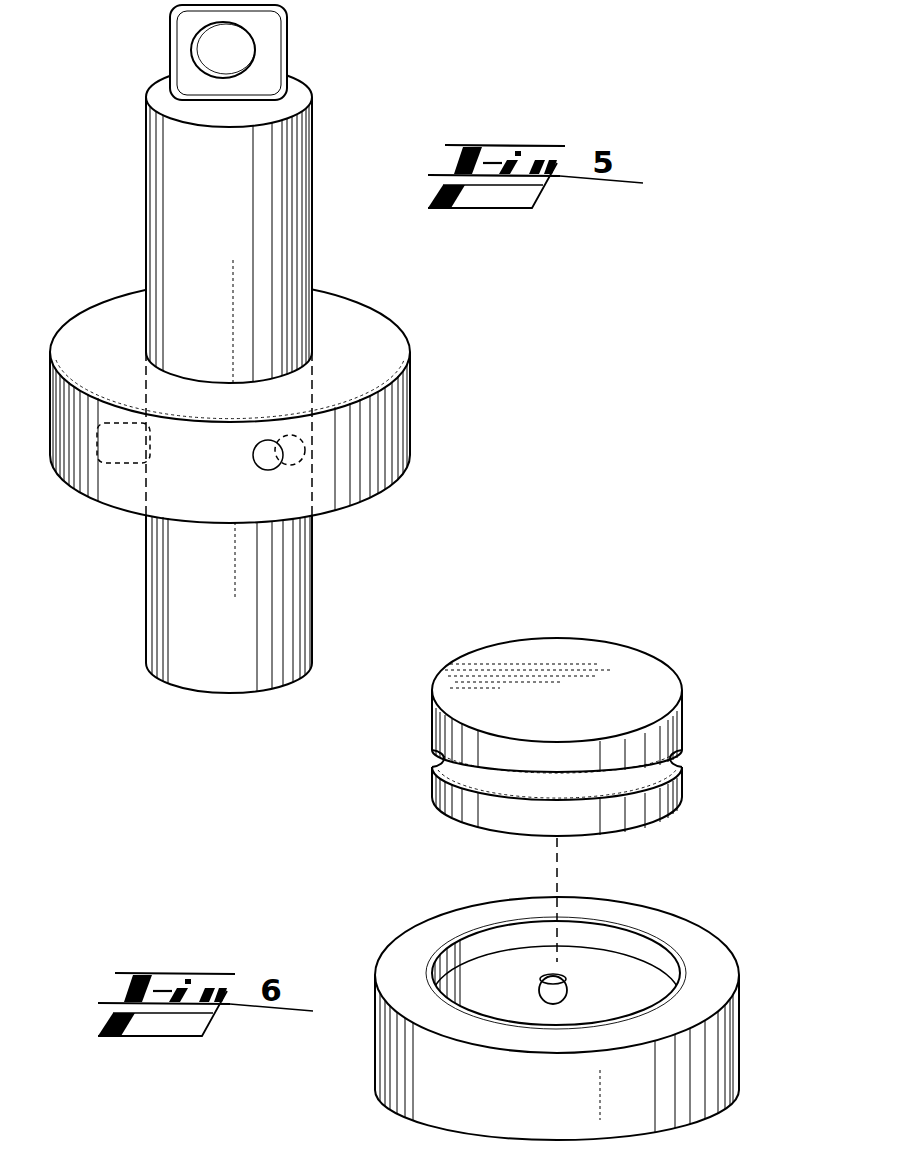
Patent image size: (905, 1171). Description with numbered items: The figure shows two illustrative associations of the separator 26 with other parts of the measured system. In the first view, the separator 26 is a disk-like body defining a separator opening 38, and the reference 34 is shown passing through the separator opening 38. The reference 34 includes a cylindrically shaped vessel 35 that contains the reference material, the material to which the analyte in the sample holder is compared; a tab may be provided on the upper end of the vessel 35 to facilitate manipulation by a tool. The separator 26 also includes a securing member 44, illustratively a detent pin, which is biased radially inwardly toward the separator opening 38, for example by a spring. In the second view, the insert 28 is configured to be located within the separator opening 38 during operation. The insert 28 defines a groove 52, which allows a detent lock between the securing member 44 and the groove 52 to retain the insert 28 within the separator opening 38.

In FIG. 5, the separator 26 is at (358, 322).
In FIG. 6, the separator 26 is at (450, 920).
In FIG. 6, the insert 28 is at (643, 828).
In FIG. 5, the reference 34 is at (173, 613).
In FIG. 5, the vessel 35 is at (312, 143).
In FIG. 5, the separator opening 38 is at (147, 354).
In FIG. 5, the securing member 44 is at (297, 468).
In FIG. 6, the securing member 44 is at (568, 978).
In FIG. 6, the groove 52 is at (683, 757).